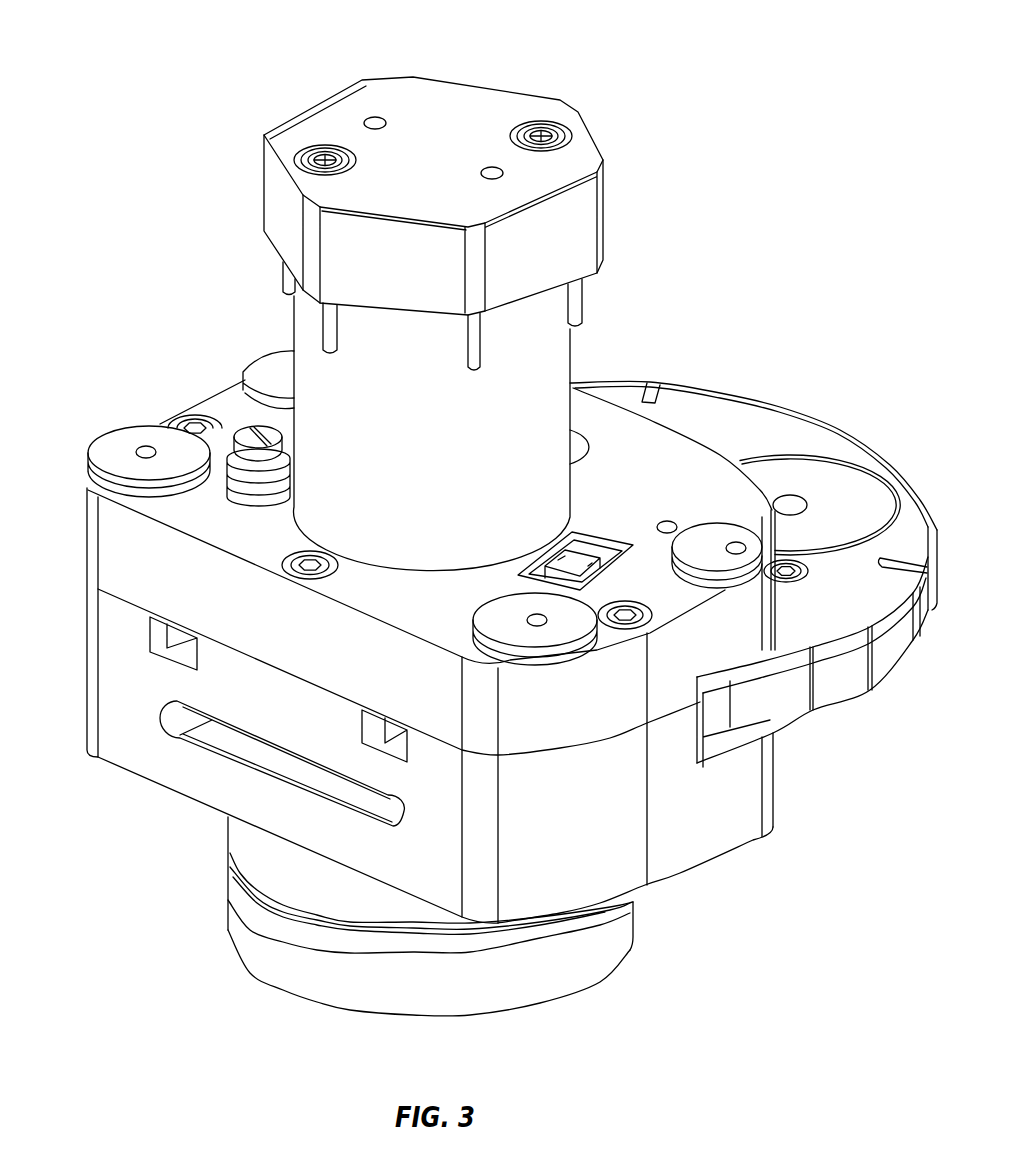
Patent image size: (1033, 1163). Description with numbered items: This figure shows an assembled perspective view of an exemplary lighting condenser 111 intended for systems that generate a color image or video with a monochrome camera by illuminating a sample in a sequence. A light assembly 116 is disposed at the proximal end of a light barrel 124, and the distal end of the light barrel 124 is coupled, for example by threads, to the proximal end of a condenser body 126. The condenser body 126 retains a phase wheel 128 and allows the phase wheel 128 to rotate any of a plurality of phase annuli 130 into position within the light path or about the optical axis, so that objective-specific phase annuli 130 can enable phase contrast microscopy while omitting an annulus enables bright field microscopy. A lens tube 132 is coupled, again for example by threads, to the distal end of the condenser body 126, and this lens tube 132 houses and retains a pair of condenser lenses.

The lighting condenser 111 is at (866, 167).
The light assembly 116 is at (363, 144).
The light barrel 124 is at (452, 449).
The condenser body 126 is at (64, 504).
The phase wheel 128 is at (866, 706).
The phase annuli 130 is at (840, 503).
The lens tube 132 is at (196, 898).